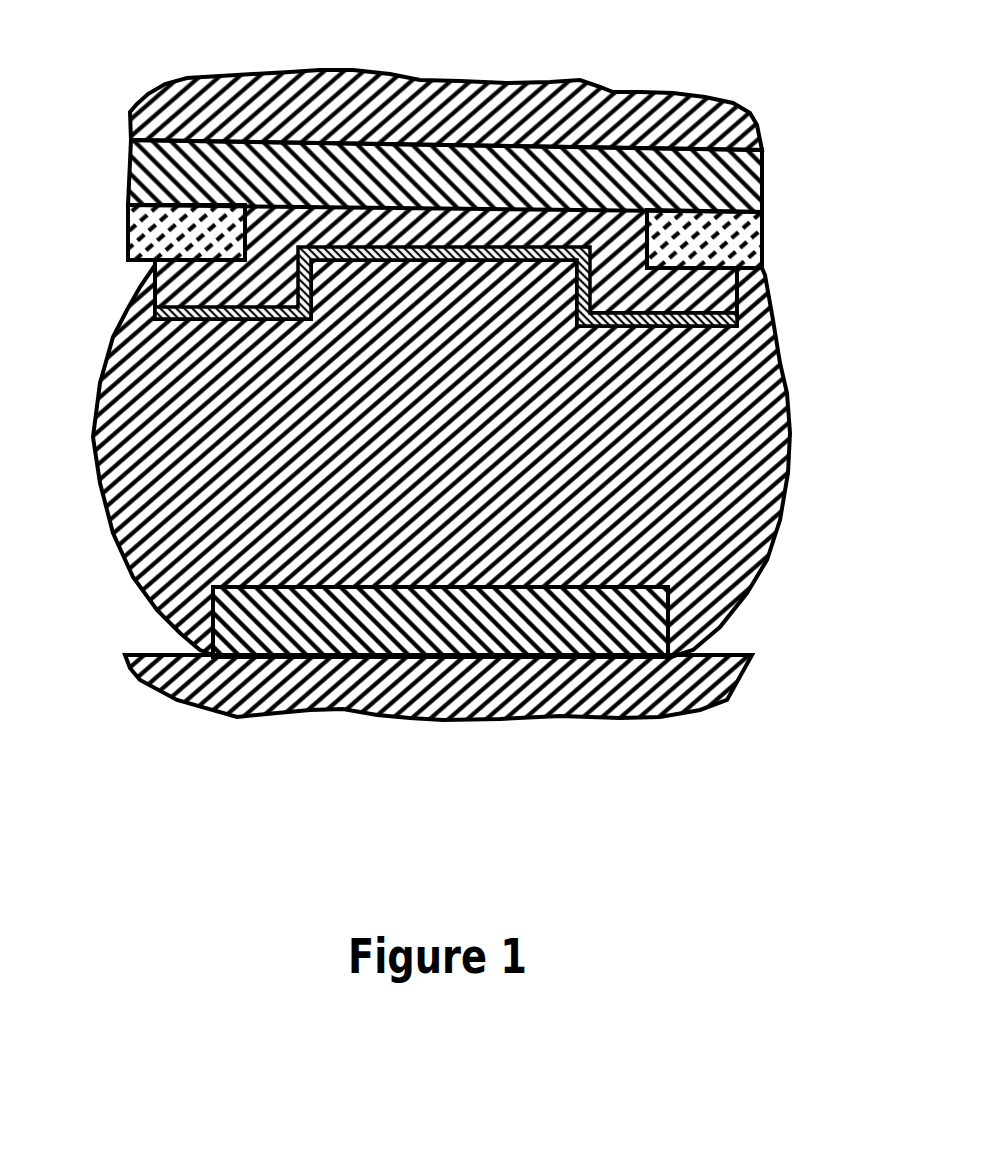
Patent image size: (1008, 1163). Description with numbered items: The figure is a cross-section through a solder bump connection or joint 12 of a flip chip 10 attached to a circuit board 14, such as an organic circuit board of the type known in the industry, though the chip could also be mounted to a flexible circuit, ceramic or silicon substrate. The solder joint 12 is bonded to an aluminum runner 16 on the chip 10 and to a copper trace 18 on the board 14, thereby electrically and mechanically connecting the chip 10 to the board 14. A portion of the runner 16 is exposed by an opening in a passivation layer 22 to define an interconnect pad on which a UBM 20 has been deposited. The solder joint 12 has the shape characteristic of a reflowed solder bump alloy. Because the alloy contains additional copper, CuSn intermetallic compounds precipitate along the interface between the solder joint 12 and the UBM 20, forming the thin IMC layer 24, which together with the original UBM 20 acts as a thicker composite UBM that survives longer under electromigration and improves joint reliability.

The flip chip 10 is at (420, 90).
The solder bump connection 12 is at (137, 358).
The circuit board 14 is at (693, 717).
The aluminum runner 16 is at (143, 175).
The copper trace 18 is at (227, 608).
The UBM 20 is at (705, 293).
The passivation layer 22 is at (157, 237).
The IMC layer 24 is at (700, 307).